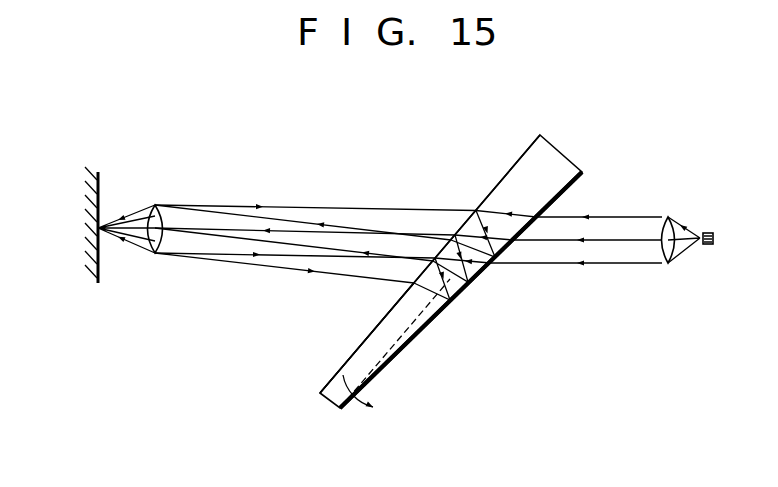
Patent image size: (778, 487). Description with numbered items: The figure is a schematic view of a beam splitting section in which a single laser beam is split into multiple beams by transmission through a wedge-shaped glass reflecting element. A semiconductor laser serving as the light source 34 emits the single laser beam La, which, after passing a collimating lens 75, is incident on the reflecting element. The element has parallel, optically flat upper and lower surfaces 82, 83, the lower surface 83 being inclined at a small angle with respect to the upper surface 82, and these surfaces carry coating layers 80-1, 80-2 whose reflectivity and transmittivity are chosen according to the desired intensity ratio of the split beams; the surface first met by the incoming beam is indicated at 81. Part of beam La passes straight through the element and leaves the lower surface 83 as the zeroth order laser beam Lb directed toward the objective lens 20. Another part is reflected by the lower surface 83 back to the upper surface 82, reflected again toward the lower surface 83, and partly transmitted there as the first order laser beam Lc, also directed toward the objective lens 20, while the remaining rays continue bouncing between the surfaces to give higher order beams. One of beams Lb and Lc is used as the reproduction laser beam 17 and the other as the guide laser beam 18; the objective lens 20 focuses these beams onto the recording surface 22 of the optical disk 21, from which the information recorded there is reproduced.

The optical disk 21 is at (104, 191).
The recording surface 22 is at (98, 267).
The objective lens 20 is at (157, 255).
The 0-th order laser beam Lb is at (226, 232).
The 1-st order laser beam Lc is at (223, 243).
The reproduction laser beam 17 is at (292, 207).
The guide laser beam 18 is at (337, 225).
The lower surface 83 is at (534, 134).
The first surface of plate 81 is at (496, 190).
The upper surface 82 is at (568, 186).
The coating layer 80-1 is at (441, 309).
The coating layer 80-2 is at (359, 348).
The incident laser beam La is at (630, 237).
The collimator lens 75 is at (667, 258).
The light source 34 is at (705, 245).